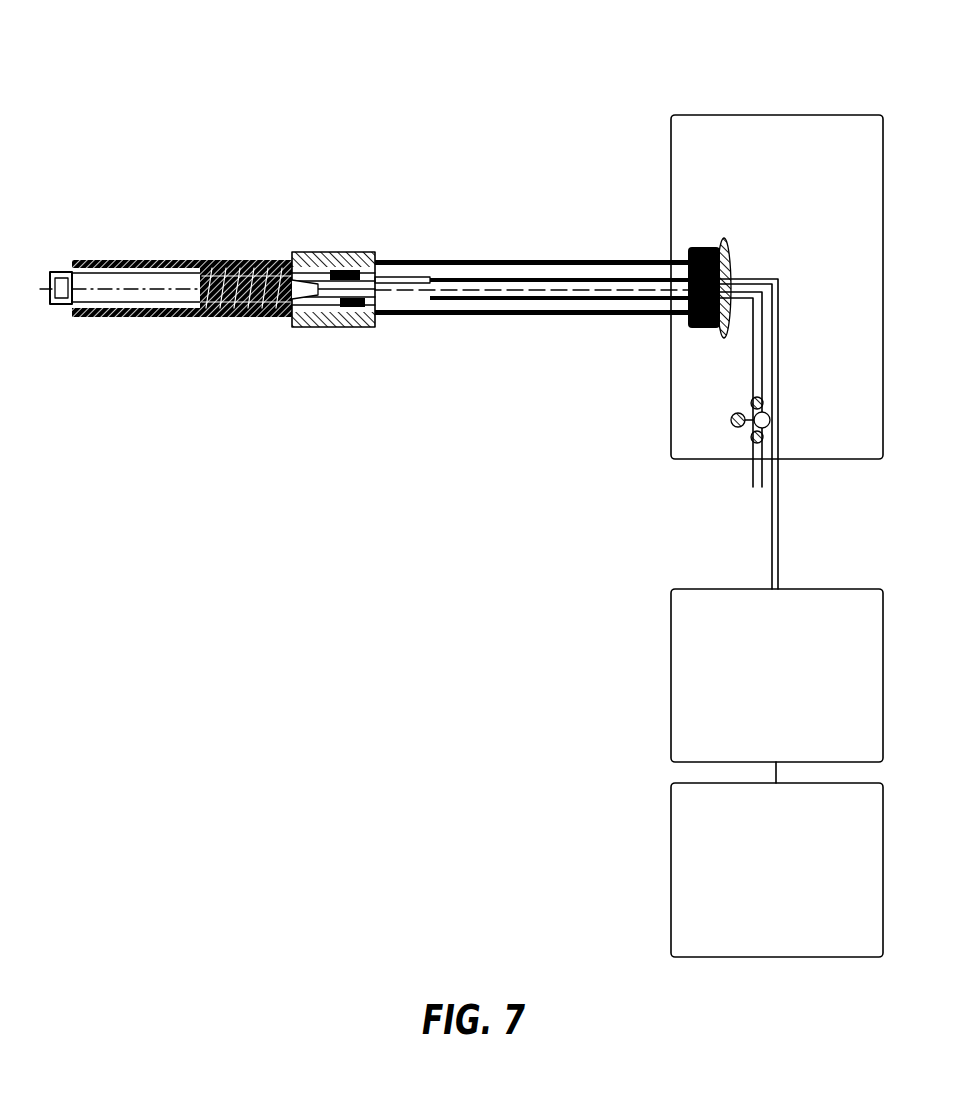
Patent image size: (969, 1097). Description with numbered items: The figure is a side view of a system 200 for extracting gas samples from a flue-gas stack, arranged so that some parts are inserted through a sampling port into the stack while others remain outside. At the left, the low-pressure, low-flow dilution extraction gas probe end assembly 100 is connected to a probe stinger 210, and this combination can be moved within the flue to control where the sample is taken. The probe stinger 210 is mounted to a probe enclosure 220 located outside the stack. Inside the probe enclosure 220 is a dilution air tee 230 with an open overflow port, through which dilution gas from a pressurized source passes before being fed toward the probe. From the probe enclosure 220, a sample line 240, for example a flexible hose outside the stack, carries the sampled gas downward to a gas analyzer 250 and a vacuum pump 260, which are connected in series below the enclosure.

The system 200 is at (357, 88).
The probe end assembly 100 is at (208, 318).
The probe stinger 210 is at (594, 254).
The probe enclosure 220 is at (657, 394).
The dilution air tee 230 is at (742, 437).
The sample line 240 is at (766, 525).
The gas analyzer 250 is at (657, 677).
The vacuum pump 260 is at (657, 876).